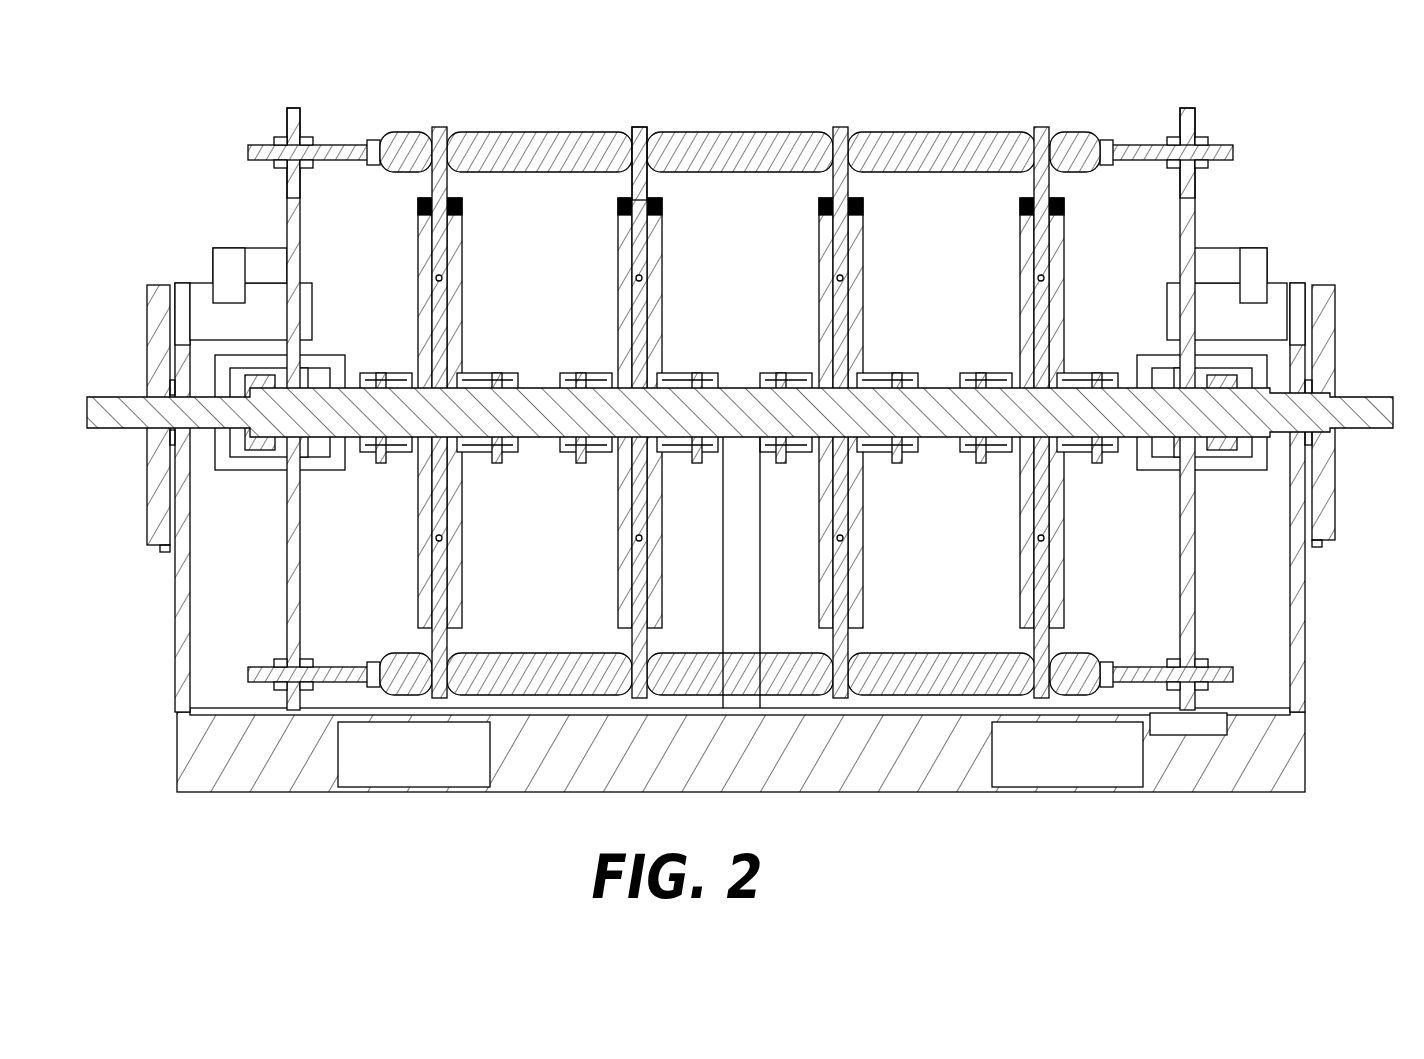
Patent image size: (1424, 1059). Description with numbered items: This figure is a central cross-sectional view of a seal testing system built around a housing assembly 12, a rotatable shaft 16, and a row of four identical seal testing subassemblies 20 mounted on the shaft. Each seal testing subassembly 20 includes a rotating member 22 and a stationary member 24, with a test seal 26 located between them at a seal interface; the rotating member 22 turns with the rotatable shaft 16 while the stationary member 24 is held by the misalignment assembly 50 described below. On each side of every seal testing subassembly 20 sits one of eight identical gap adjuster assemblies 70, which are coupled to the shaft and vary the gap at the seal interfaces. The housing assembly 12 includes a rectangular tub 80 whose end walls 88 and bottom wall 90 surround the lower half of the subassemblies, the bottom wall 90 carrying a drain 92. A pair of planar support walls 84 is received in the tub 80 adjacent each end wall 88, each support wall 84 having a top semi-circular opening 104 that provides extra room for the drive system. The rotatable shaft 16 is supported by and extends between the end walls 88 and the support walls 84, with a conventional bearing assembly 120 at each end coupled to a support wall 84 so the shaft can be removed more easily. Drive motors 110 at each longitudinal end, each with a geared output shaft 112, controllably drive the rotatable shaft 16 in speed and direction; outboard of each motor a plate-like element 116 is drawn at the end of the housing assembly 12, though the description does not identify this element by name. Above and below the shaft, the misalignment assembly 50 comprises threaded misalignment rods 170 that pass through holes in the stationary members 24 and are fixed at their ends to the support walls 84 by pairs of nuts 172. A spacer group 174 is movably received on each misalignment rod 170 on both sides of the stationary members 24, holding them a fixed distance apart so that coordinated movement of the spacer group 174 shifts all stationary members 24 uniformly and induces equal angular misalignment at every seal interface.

The housing assembly 12 is at (140, 573).
The rotatable shaft 16 is at (100, 400).
The seal testing subassemblies 20 is at (408, 250).
The rotating member 22 is at (622, 330).
The stationary member 24 is at (652, 178).
The test seal 26 is at (828, 207).
The misalignment assembly 50 is at (795, 95).
The gap adjuster assemblies 70 is at (402, 372).
The tub 80 is at (182, 630).
The support walls 84 is at (290, 548).
The end walls 88 is at (182, 675).
The bottom wall 90 is at (238, 708).
The drain 92 is at (1195, 728).
The semi-circular opening 104 is at (296, 178).
The drive motors 110 is at (217, 331).
The geared output shaft 112 is at (183, 330).
The end flange 116 is at (158, 503).
The bearing assembly 120 is at (315, 477).
The misalignment rods 170 is at (1140, 147).
The nuts 172 is at (1175, 137).
The spacer group 174 is at (742, 130).